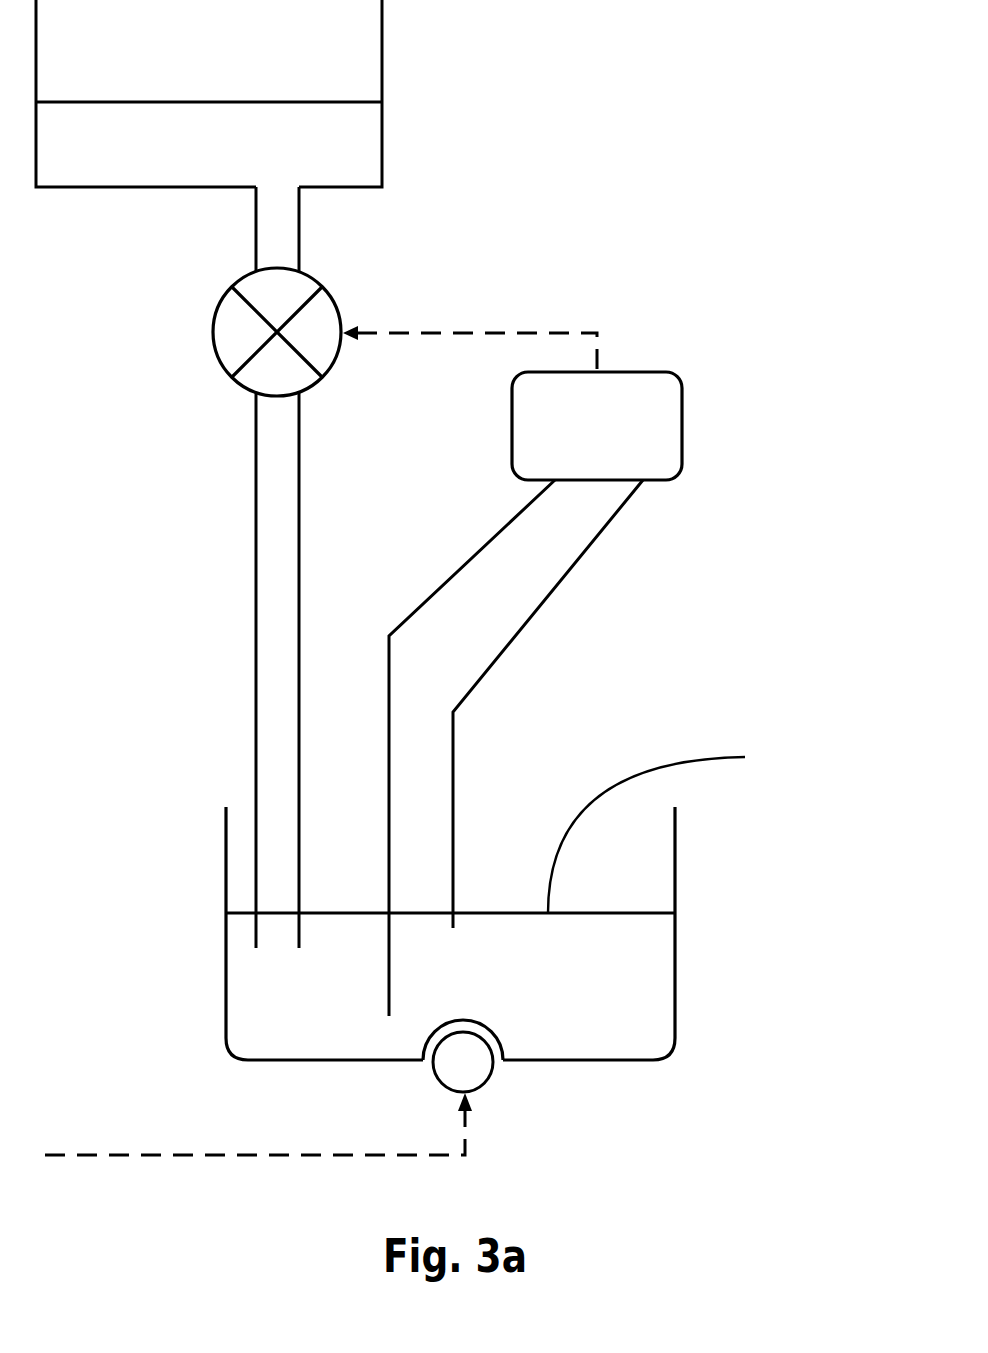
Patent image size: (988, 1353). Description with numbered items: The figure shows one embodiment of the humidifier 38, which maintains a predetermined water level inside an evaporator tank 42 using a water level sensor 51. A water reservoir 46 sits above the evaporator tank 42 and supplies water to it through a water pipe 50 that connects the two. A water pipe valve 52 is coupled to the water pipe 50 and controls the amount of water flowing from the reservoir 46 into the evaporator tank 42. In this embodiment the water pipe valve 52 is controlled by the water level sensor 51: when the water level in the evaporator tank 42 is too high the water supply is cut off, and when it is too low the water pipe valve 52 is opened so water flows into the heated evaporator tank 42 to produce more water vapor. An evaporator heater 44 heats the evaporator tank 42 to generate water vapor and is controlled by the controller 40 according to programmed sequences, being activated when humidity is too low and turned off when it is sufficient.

The humidifier 38 is at (714, 432).
The controller 40 is at (258, 1124).
The evaporator tank 42 is at (677, 943).
The evaporator heater 44 is at (473, 1070).
The water reservoir 46 is at (382, 135).
The water pipe 50 is at (257, 540).
The water level sensor 51 is at (668, 372).
The water pipe valve 52 is at (343, 320).